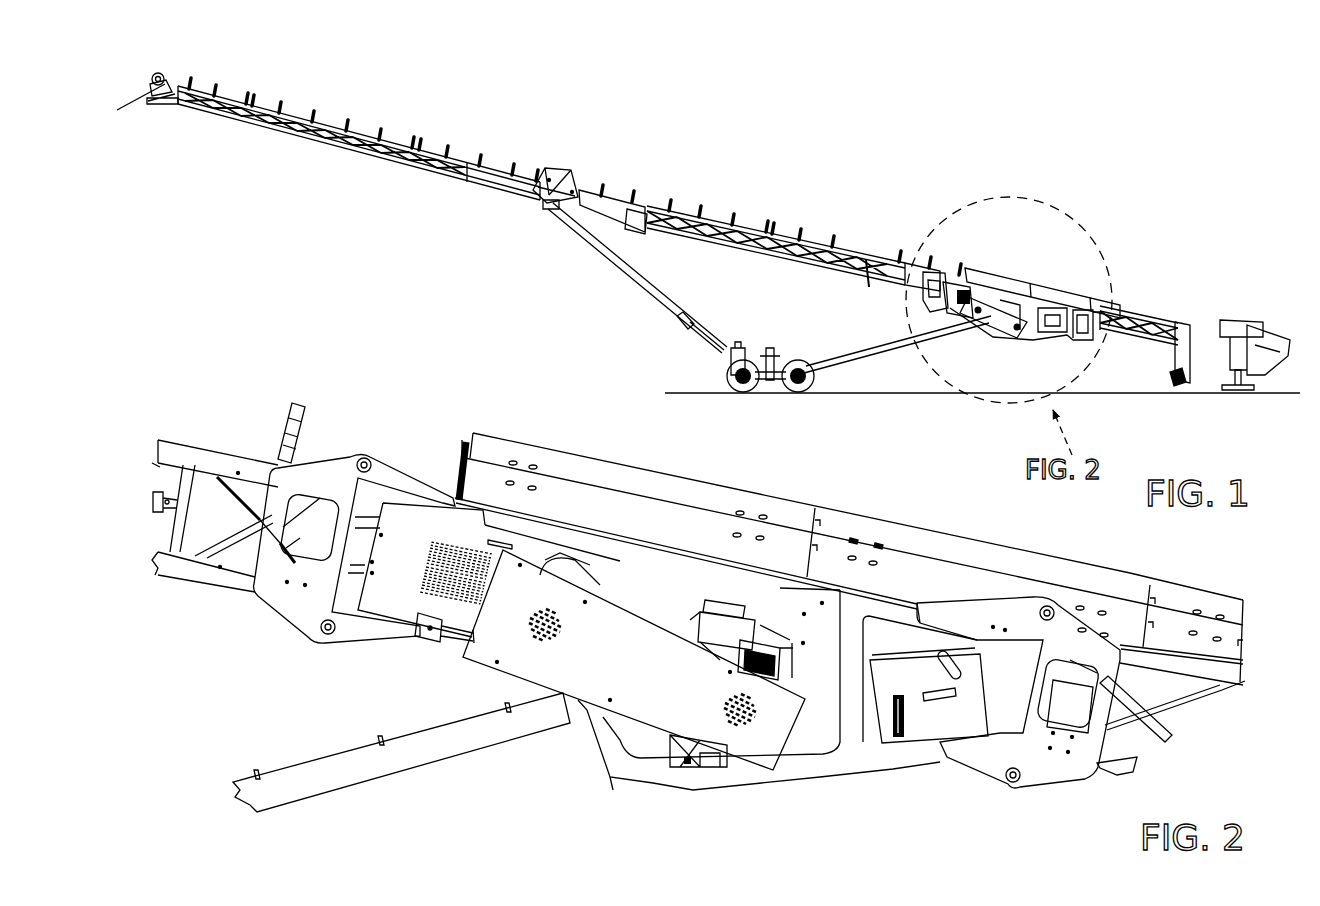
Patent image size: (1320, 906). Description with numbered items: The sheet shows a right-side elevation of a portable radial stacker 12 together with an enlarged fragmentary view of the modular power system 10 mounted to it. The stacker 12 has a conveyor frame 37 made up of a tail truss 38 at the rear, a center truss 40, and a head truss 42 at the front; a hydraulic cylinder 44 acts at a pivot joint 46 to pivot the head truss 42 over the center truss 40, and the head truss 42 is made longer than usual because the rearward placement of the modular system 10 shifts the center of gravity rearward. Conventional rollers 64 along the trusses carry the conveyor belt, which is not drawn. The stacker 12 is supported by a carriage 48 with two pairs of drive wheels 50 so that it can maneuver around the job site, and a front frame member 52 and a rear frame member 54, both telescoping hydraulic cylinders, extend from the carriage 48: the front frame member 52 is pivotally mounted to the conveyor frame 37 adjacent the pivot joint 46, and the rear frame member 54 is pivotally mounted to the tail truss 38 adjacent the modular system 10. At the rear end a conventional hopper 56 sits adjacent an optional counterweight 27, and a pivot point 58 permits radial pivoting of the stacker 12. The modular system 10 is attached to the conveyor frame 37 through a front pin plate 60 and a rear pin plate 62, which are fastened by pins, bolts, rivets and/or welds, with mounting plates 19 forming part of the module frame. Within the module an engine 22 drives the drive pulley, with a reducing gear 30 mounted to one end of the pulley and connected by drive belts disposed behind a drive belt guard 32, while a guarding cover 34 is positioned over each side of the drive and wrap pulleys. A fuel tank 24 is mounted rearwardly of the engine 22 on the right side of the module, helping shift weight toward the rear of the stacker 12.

In FIG. 1, the modular system 10 is at (1051, 293).
In FIG. 2, the modular system 10 is at (657, 790).
In FIG. 1, the portable radial stacker 12 is at (571, 150).
In FIG. 2, the portable radial stacker 12 is at (186, 432).
In FIG. 2, the mounting plates 19 is at (398, 468).
In FIG. 2, the engine 22 is at (735, 605).
In FIG. 2, the fuel tank 24 is at (920, 740).
In FIG. 1, the counterweight 27 is at (1216, 358).
In FIG. 2, the reducing gear 30 is at (560, 553).
In FIG. 2, the drive belt guard 32 is at (649, 670).
In FIG. 2, the guarding cover 34 is at (414, 578).
In FIG. 1, the conveyor frame 37 is at (806, 278).
In FIG. 1, the tail truss 38 is at (1151, 352).
In FIG. 2, the tail truss 38 is at (1218, 684).
In FIG. 1, the center truss 40 is at (746, 267).
In FIG. 1, the head truss 42 is at (348, 153).
In FIG. 1, the hydraulic cylinder 44 is at (610, 206).
In FIG. 1, the pivot joint 46 is at (551, 162).
In FIG. 1, the carriage 48 is at (782, 393).
In FIG. 1, the drive wheels 50 is at (729, 381).
In FIG. 1, the front frame member 52 is at (626, 278).
In FIG. 1, the rear frame member 54 is at (888, 352).
In FIG. 2, the rear frame member 54 is at (400, 777).
In FIG. 1, the hopper 56 is at (1240, 325).
In FIG. 1, the pivot point 58 is at (1238, 393).
In FIG. 1, the front pin plate 60 is at (920, 303).
In FIG. 2, the front pin plate 60 is at (287, 612).
In FIG. 1, the rear pin plate 62 is at (1080, 343).
In FIG. 2, the rear pin plate 62 is at (1050, 782).
In FIG. 1, the rollers 64 is at (381, 123).
In FIG. 2, the rollers 64 is at (299, 401).